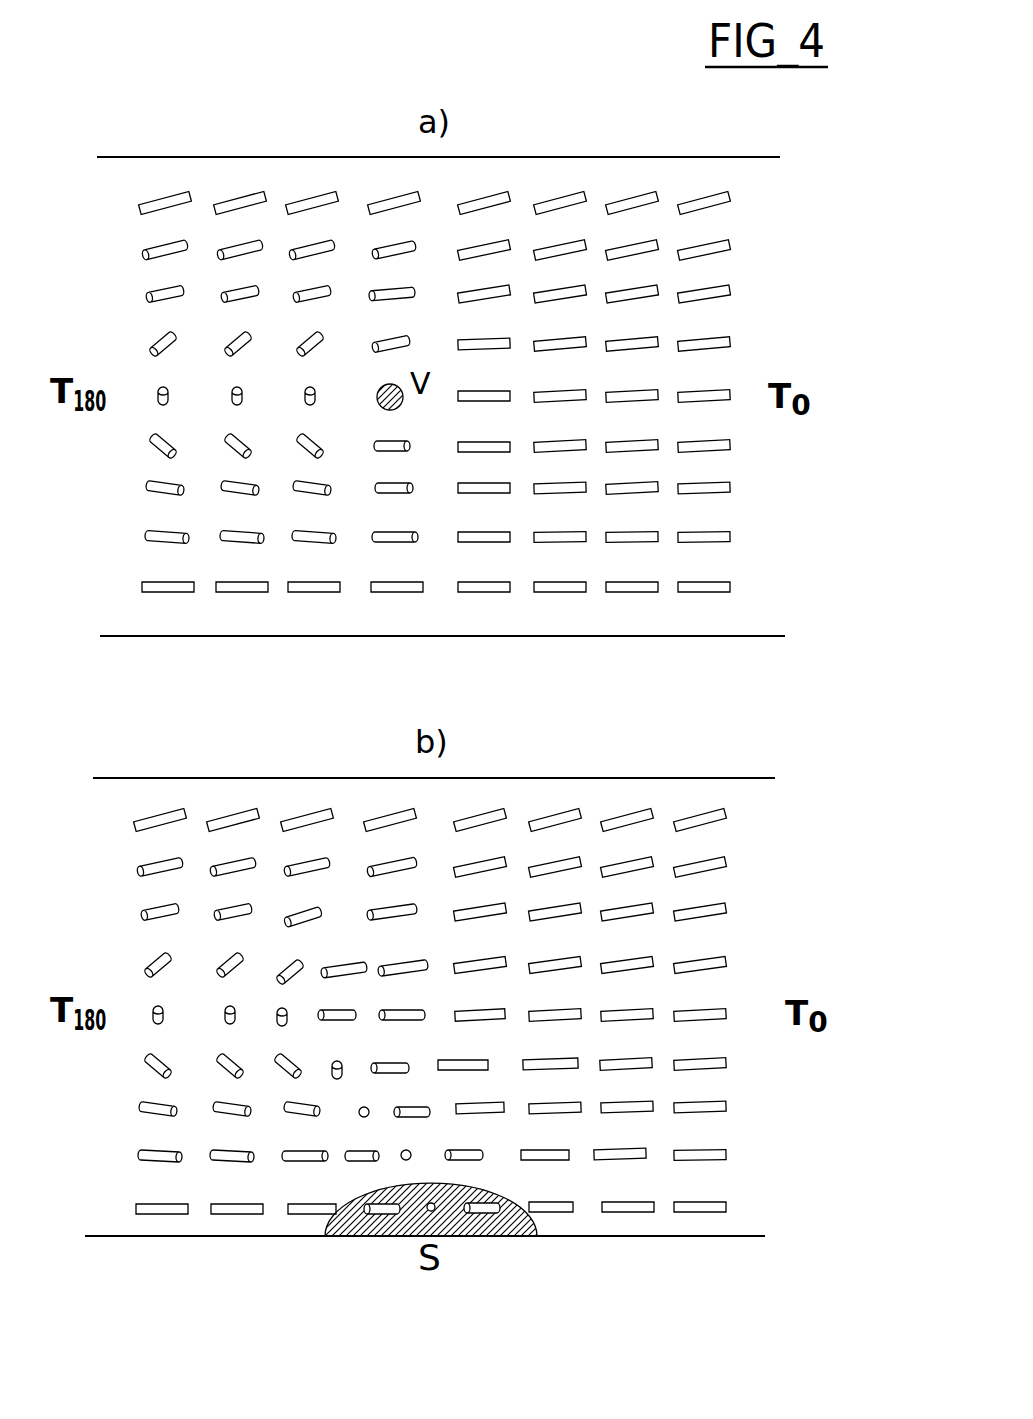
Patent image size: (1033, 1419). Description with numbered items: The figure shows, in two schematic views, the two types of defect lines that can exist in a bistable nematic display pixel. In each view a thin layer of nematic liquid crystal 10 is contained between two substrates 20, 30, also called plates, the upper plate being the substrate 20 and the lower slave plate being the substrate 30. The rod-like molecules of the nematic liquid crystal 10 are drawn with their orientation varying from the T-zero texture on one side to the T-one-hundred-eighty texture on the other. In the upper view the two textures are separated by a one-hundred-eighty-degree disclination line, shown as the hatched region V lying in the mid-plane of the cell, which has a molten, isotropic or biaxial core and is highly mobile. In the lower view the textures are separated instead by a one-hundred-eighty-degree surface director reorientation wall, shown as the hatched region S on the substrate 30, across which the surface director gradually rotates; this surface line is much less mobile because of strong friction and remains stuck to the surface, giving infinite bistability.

The nematic liquid crystal layer 10 is at (772, 479).
The substrate 20 is at (186, 157).
The substrate 30 is at (170, 636).